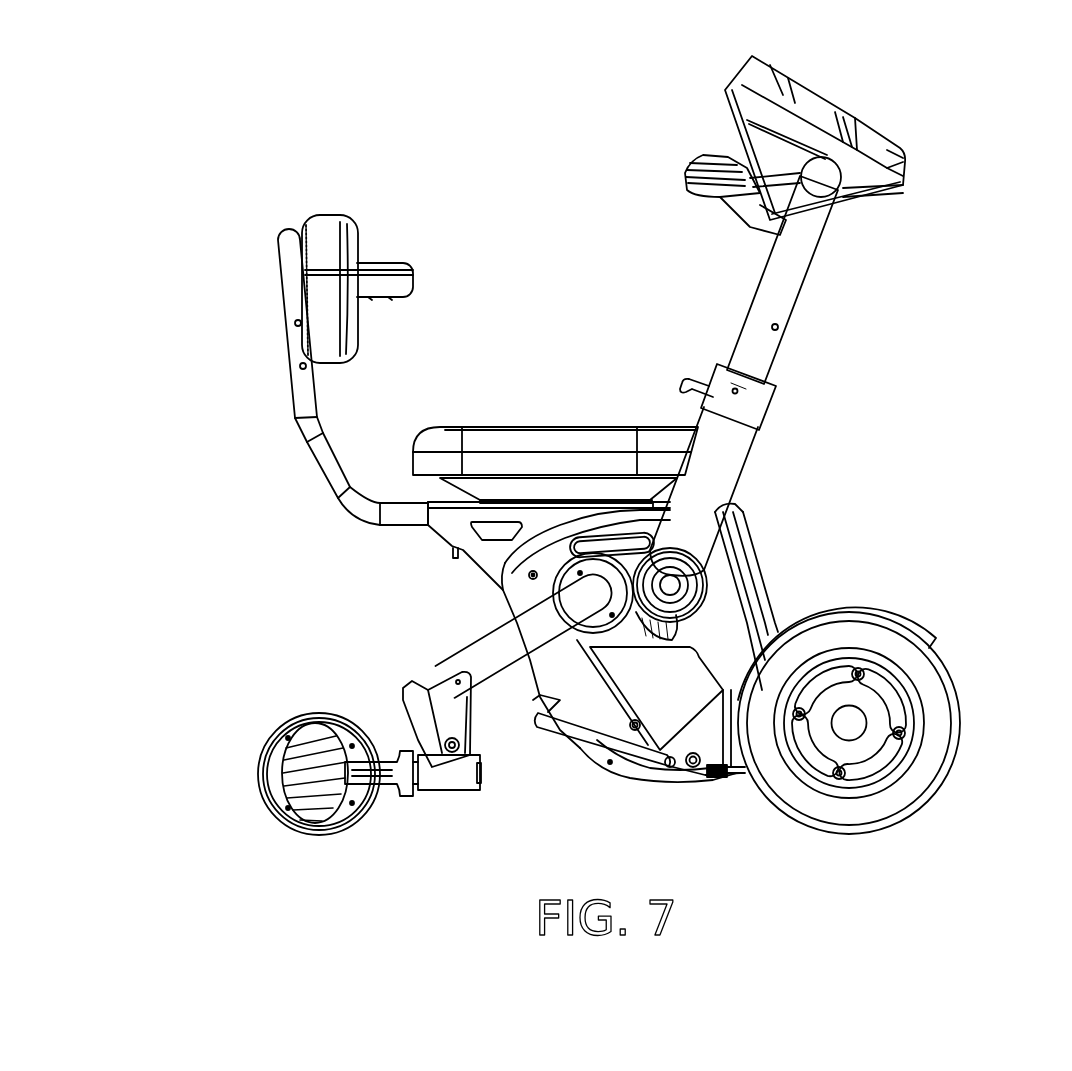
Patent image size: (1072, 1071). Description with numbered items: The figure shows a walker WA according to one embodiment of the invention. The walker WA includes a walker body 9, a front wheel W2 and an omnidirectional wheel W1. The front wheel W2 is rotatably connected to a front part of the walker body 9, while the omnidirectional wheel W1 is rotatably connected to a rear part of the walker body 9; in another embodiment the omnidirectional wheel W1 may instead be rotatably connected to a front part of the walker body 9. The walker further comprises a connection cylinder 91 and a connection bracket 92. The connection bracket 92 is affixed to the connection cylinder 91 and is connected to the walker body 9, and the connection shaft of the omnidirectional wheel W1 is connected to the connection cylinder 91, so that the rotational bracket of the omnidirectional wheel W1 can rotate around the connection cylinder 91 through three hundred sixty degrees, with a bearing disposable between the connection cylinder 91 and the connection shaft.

The walker WA is at (150, 42).
The walker body 9 is at (716, 588).
The connection cylinder 91 is at (450, 787).
The connection bracket 92 is at (407, 695).
The omnidirectional wheel W1 is at (300, 722).
The front wheel W2 is at (960, 723).